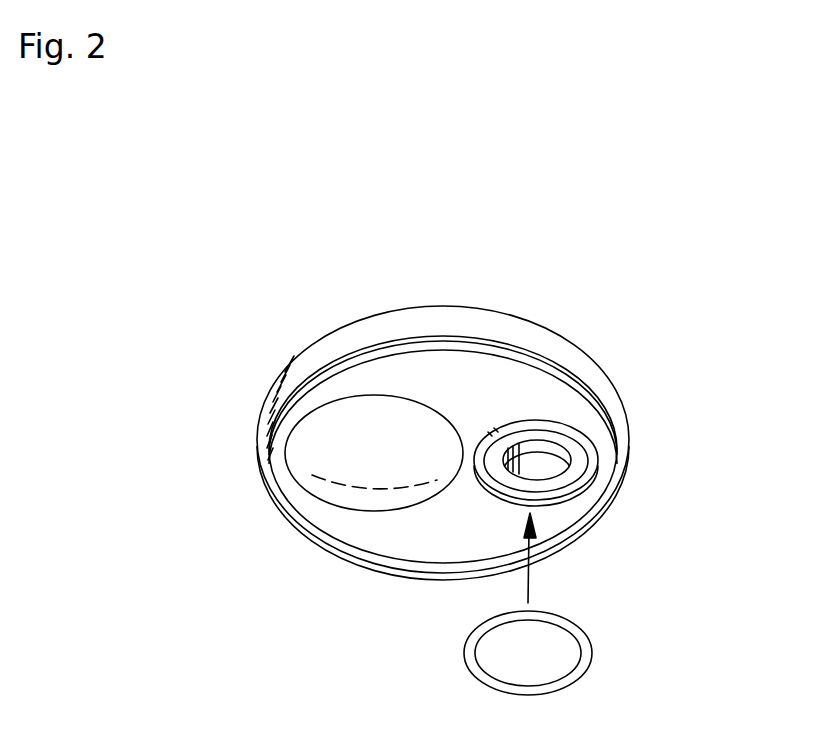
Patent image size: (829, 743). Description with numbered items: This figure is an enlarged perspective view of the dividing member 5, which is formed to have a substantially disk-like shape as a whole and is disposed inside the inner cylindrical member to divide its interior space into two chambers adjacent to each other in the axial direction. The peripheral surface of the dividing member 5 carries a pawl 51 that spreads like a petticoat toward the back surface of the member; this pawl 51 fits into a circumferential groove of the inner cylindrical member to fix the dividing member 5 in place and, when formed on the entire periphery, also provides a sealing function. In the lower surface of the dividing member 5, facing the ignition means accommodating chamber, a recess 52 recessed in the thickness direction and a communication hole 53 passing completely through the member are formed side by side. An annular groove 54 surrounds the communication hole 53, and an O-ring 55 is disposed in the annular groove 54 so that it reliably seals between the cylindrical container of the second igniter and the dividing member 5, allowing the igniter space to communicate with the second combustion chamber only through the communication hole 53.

The dividing member 5 is at (435, 282).
The pawl 51 is at (610, 398).
The recess 52 is at (337, 448).
The communication hole 53 is at (550, 468).
The annular groove 54 is at (590, 481).
The O-ring 55 is at (583, 661).